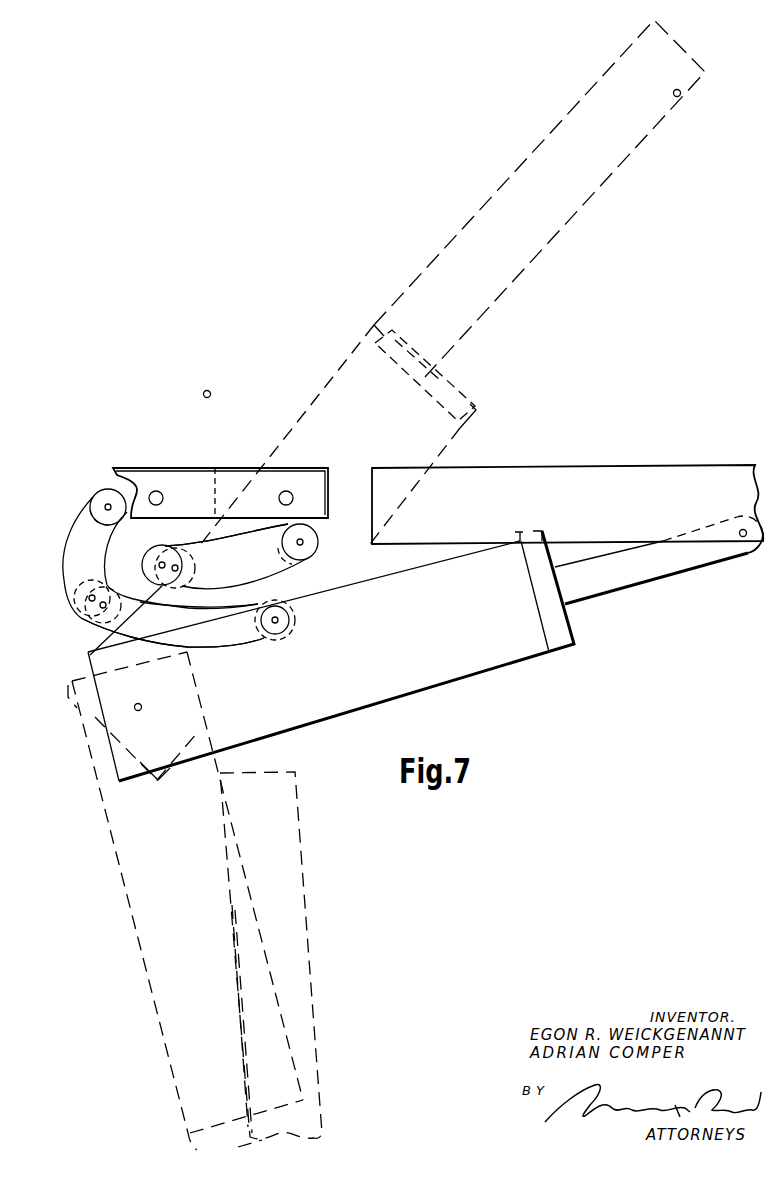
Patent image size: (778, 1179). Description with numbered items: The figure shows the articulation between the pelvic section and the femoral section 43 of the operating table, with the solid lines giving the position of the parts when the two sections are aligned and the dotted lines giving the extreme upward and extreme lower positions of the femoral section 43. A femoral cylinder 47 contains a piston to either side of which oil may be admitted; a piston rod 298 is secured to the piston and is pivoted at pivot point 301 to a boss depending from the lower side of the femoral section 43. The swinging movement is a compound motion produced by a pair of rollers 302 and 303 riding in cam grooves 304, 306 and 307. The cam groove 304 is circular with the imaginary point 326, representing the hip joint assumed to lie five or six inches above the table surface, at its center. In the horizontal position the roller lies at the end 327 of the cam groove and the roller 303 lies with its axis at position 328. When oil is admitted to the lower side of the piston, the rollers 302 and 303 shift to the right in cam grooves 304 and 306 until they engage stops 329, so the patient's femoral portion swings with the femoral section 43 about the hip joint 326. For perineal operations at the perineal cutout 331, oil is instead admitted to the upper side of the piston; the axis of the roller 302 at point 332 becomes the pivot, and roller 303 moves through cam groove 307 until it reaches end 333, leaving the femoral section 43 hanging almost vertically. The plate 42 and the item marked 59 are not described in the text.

The plate 42 is at (225, 468).
The femoral section 43 is at (640, 473).
The femoral cylinder 47 is at (445, 682).
The pivot axis 59 is at (464, 450).
The piston rod 298 is at (617, 577).
The pivot point 301 is at (745, 545).
The roller 302 is at (236, 556).
The roller 303 is at (199, 622).
The cam groove 304 is at (213, 550).
The cam groove 306 is at (230, 647).
The cam groove 307 is at (70, 533).
The imaginary point 326 is at (211, 391).
The end of the cam groove 327 is at (145, 555).
The position 328 is at (103, 608).
The stops 329 is at (313, 542).
The perineal cutout 331 is at (212, 505).
The point 332 is at (162, 560).
The end of the cam groove 333 is at (117, 488).